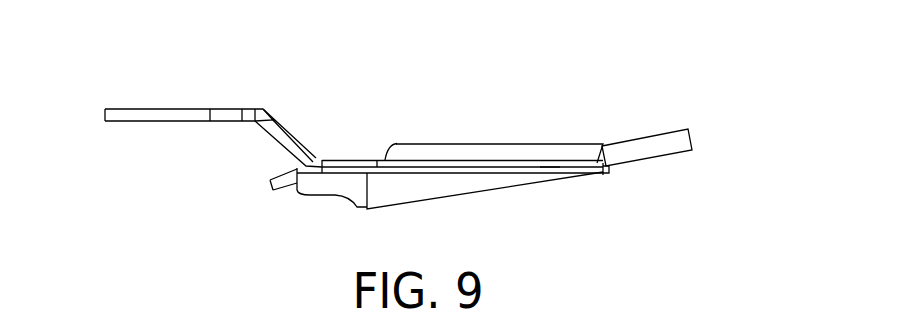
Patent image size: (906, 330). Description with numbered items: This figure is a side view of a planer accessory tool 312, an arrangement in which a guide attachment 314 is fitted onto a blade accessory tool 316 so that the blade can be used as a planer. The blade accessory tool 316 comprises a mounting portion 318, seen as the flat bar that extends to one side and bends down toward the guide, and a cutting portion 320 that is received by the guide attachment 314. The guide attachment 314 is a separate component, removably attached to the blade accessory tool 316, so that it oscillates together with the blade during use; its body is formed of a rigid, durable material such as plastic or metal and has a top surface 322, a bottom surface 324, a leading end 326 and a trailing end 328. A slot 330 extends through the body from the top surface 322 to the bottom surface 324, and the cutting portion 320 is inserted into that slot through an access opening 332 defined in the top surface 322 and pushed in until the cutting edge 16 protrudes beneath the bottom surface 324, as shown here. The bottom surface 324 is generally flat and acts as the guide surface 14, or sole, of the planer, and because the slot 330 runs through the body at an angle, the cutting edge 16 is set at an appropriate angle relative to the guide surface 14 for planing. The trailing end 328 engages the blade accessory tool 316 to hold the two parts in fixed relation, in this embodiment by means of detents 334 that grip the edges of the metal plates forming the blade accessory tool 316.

The planer accessory tool 312 is at (656, 90).
The mounting portion 318 is at (125, 110).
The blade accessory tool 316 is at (262, 108).
The cutting portion 320 is at (355, 159).
The access opening 332 is at (377, 160).
The top surface 322 is at (494, 113).
The guide attachment 314 is at (518, 143).
The slot 330 is at (540, 167).
The detents 334 is at (322, 160).
The bottom surface 324 is at (485, 207).
The guide surface 14 is at (507, 183).
The trailing end 328 is at (313, 197).
The leading end 326 is at (692, 148).
The cutting edge 16 is at (607, 173).